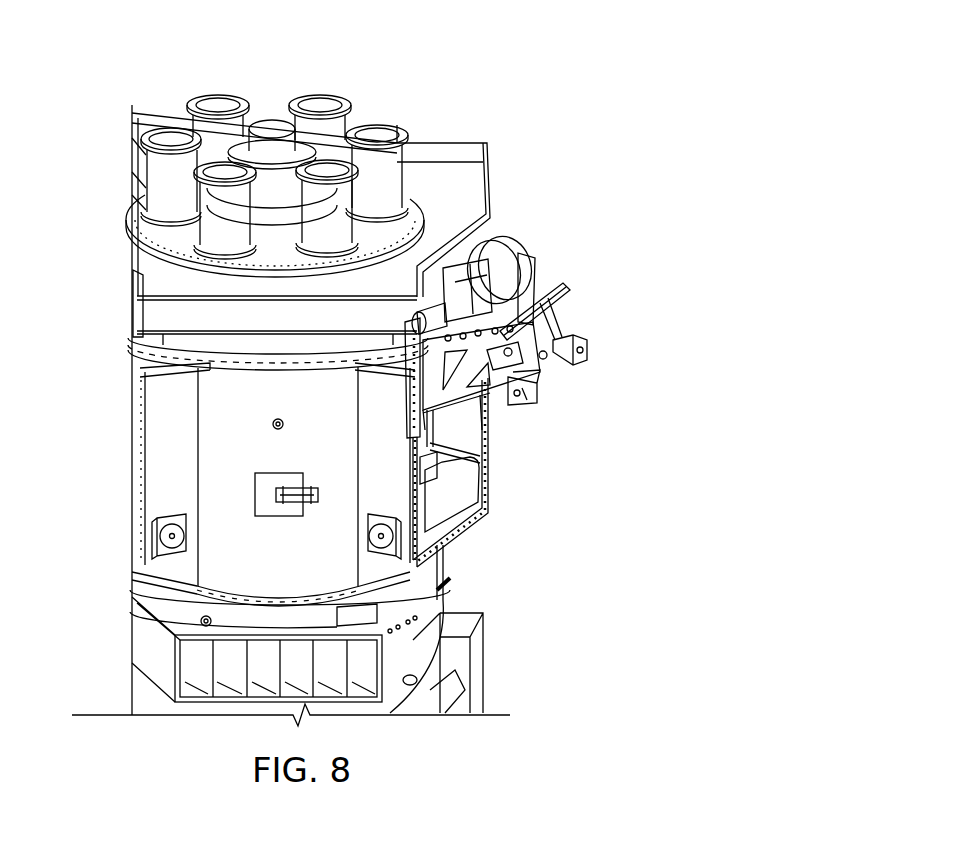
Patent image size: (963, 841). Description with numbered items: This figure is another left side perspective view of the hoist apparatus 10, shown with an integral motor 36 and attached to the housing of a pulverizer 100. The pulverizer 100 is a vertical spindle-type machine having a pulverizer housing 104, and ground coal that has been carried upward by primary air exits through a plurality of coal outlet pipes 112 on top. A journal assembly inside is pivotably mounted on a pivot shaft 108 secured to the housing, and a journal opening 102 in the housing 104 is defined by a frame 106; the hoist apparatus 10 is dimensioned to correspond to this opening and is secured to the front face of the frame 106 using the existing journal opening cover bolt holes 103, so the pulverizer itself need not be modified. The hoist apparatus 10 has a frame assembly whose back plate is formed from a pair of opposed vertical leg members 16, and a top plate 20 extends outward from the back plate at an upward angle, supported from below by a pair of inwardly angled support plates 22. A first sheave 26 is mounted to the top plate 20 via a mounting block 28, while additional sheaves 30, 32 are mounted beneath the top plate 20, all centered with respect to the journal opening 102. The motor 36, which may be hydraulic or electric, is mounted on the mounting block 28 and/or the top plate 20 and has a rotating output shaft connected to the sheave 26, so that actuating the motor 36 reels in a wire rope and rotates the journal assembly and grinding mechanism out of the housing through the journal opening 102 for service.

The pulverizer 100 is at (512, 73).
The coal outlet pipes 112 is at (346, 108).
The hoist apparatus 10 is at (559, 250).
The leg members 16 is at (412, 396).
The top plate 20 is at (563, 290).
The support plates 22 is at (480, 398).
The first sheave 26 is at (505, 245).
The mounting block 28 is at (535, 275).
The sheave 30 is at (560, 342).
The sheave 32 is at (546, 384).
The motor 36 is at (460, 262).
The journal opening 102 is at (505, 488).
The journal opening cover bolt holes 103 is at (487, 512).
The pulverizer housing 104 is at (222, 562).
The frame 106 is at (168, 422).
The pivot shaft 108 is at (178, 537).